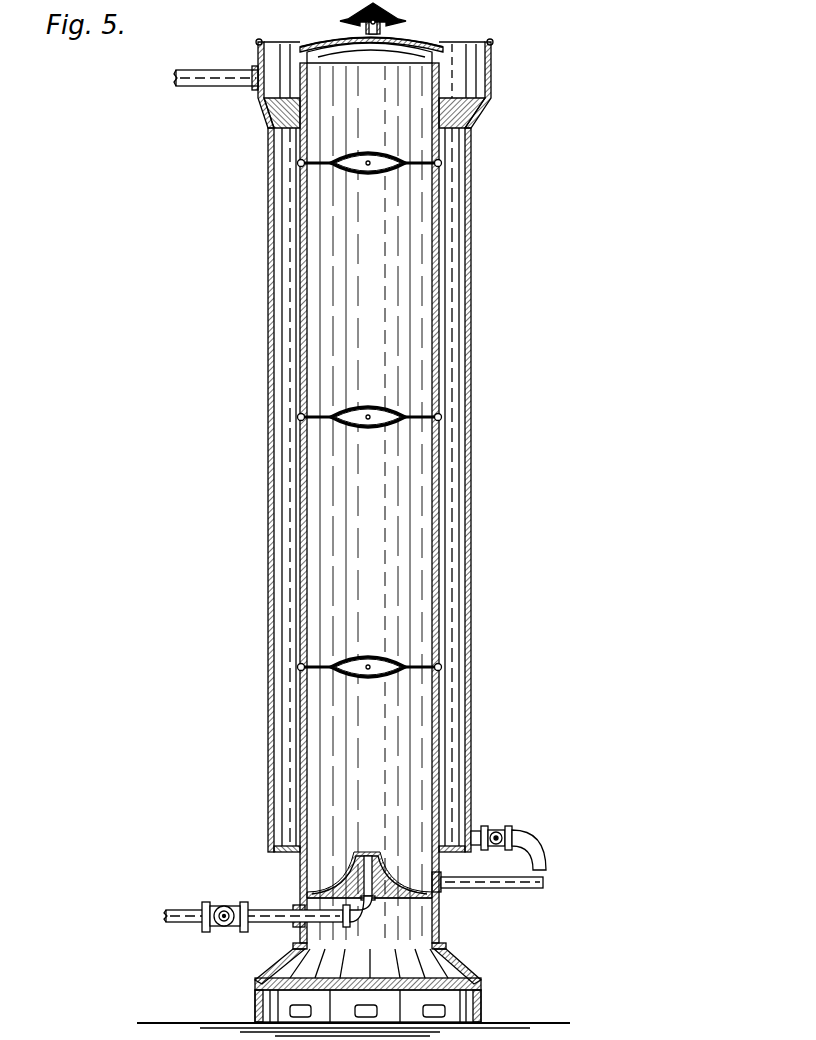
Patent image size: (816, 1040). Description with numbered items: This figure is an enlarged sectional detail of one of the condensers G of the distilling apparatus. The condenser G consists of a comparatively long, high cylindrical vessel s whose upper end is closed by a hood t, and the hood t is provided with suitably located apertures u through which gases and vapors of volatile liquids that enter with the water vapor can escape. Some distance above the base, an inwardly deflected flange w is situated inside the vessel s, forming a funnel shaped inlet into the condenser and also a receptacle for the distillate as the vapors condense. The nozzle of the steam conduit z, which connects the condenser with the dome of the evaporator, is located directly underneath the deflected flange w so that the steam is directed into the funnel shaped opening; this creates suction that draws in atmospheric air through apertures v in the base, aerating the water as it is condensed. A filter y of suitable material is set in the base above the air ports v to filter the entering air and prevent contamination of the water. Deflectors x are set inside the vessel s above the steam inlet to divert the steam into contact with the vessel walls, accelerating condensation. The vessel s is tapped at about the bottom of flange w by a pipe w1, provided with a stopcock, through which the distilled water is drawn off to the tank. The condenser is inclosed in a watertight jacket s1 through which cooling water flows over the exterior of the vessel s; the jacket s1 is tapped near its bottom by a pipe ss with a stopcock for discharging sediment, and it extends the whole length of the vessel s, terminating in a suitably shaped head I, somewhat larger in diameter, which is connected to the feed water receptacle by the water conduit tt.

The head I is at (478, 82).
The watertight jacket s1 is at (462, 630).
The cylindrical vessel s is at (371, 491).
The hood t is at (410, 40).
The aperture u is at (390, 20).
The condenser G is at (371, 503).
The deflector x is at (388, 155).
The water conduit tt is at (190, 78).
The inwardly deflected flange w is at (436, 900).
The pipe w1 is at (508, 880).
The steam conduit z is at (275, 912).
The pipe ss is at (513, 834).
The filter y is at (463, 985).
The aperture v is at (423, 1011).